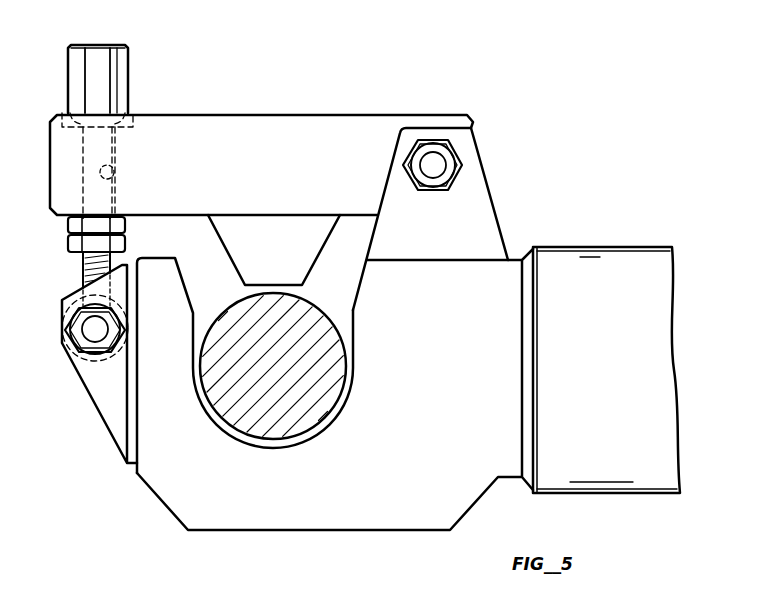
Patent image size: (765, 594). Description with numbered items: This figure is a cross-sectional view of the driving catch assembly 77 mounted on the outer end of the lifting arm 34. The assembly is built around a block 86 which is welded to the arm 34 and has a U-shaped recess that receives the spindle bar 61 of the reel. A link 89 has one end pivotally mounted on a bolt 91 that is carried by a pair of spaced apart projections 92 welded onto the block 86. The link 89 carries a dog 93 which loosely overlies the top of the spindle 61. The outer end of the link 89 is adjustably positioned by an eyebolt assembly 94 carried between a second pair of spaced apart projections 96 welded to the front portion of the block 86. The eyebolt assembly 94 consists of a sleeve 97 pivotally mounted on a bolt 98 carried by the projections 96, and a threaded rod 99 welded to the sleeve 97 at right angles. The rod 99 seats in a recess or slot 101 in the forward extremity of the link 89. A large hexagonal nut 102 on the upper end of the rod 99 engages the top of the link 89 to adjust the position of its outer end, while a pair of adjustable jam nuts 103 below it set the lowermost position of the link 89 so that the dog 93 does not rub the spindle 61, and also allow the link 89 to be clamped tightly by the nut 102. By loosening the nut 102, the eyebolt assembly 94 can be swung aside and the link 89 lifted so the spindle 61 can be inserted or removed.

The driving catch assembly 77 is at (592, 97).
The link 89 is at (318, 137).
The spaced apart projections 92 is at (477, 222).
The bolt 91 is at (437, 165).
The dog 93 is at (267, 248).
The block 86 is at (392, 503).
The spindle bar 61 is at (312, 408).
The lifting arm 34 is at (667, 470).
The eyebolt assembly 94 is at (66, 81).
The large hexagonal nut 102 is at (118, 73).
The recess or slot 101 is at (115, 171).
The adjustable jam nuts 103 is at (70, 225).
The threaded rod 99 is at (82, 267).
The spaced apart projections 96 is at (107, 422).
The sleeve 97 is at (74, 372).
The bolt 98 is at (93, 328).